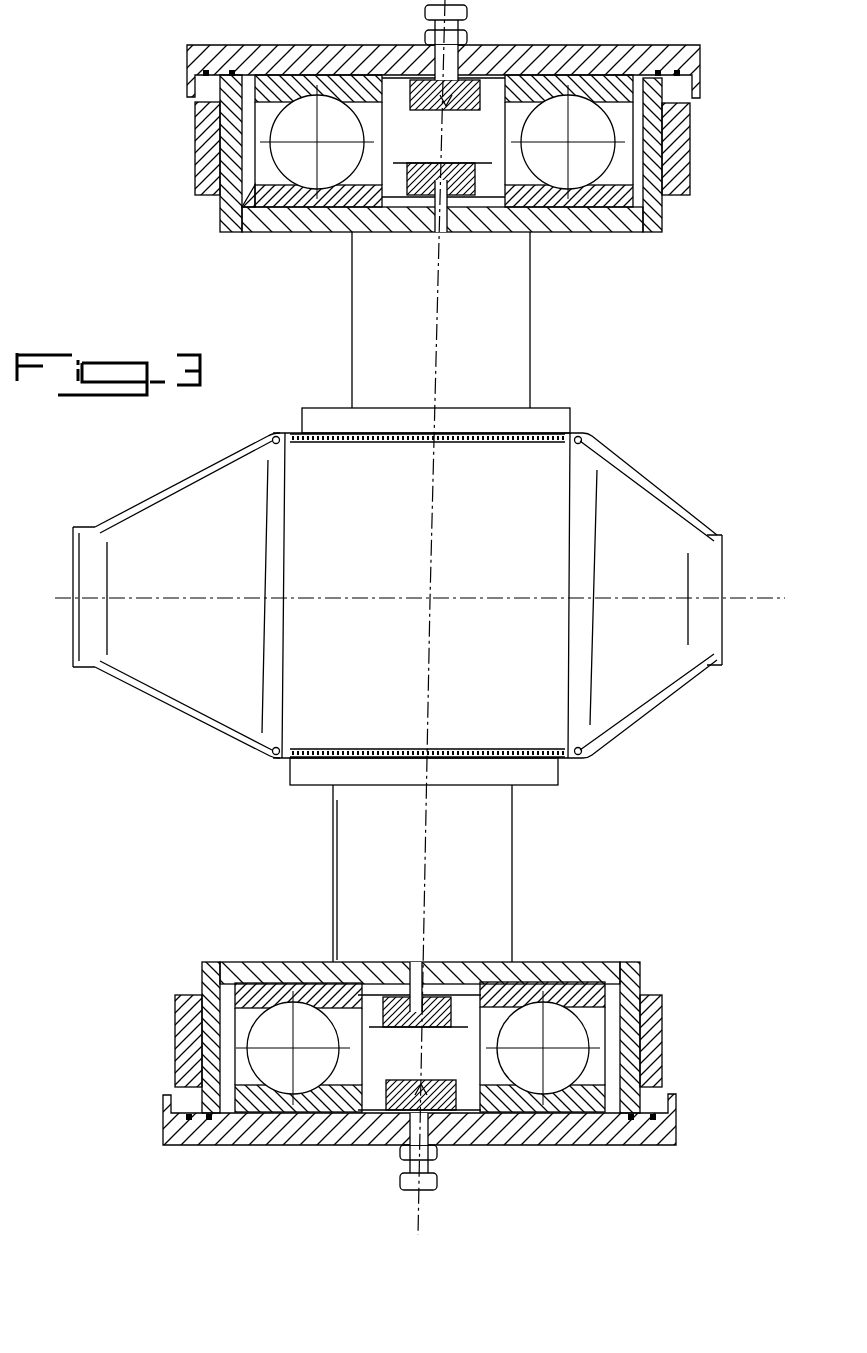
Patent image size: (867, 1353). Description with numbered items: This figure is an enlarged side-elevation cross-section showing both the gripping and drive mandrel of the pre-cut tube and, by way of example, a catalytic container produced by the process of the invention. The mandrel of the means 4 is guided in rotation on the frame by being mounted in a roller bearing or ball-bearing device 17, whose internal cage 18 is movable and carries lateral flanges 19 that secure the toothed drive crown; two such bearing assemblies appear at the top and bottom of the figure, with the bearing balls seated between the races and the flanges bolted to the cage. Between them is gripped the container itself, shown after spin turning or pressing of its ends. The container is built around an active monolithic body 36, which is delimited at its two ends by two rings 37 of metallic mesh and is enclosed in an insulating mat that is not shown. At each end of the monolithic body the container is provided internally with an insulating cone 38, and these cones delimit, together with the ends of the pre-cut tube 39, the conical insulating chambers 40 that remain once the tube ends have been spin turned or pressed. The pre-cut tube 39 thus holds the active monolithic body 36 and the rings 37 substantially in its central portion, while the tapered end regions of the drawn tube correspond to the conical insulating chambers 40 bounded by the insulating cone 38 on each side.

The means 4 is at (145, 850).
The roller bearing or ball-bearing device 17 is at (290, 137).
The internal cage 18 is at (263, 222).
The lateral flanges 19 is at (197, 117).
The active monolithic body 36 is at (320, 763).
The rings of metallic mesh 37 is at (258, 764).
The insulating cone 38 is at (673, 508).
The pre-cut tube 39 is at (548, 430).
The conical insulating chambers 40 is at (650, 477).